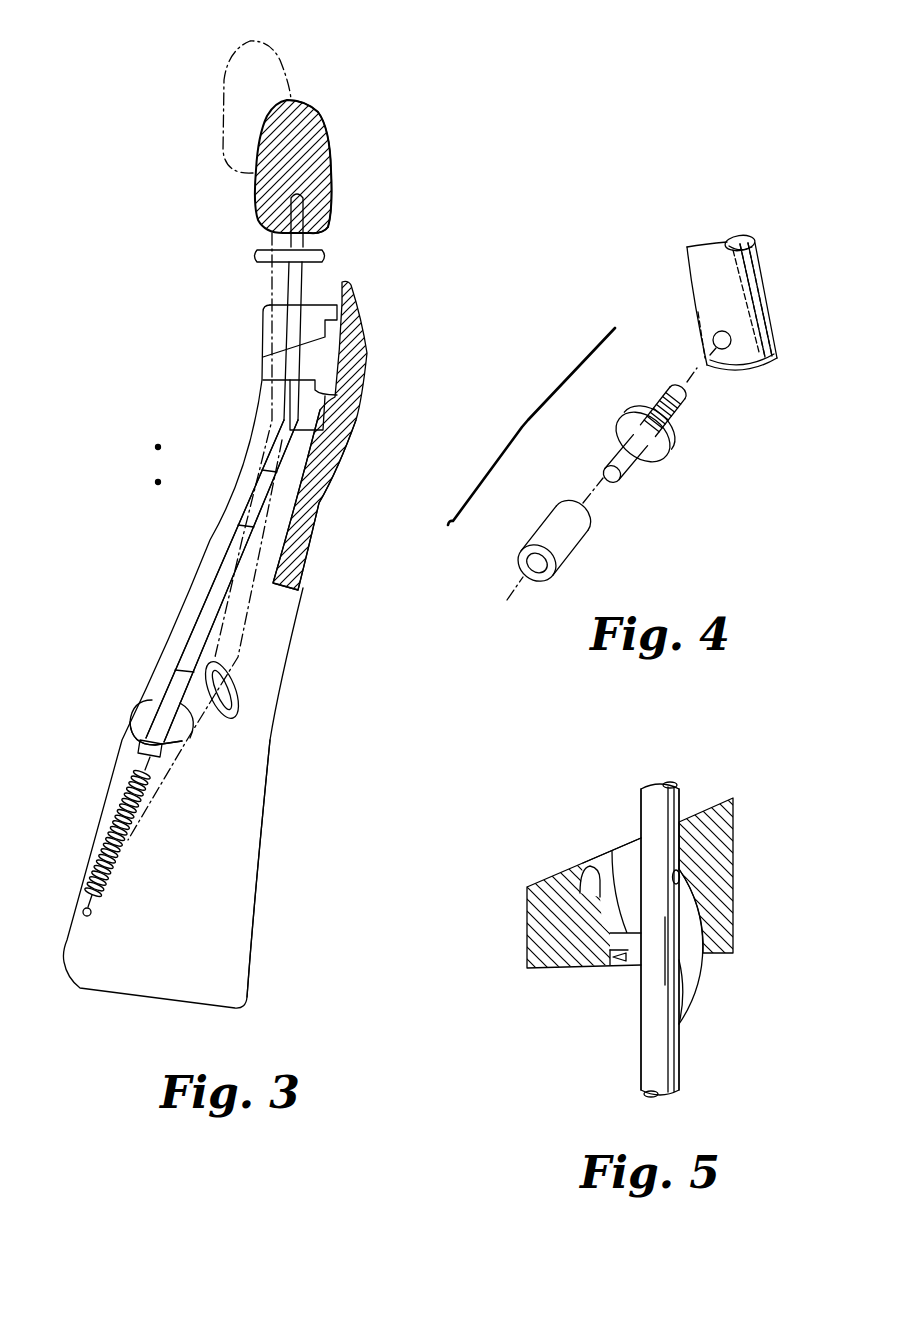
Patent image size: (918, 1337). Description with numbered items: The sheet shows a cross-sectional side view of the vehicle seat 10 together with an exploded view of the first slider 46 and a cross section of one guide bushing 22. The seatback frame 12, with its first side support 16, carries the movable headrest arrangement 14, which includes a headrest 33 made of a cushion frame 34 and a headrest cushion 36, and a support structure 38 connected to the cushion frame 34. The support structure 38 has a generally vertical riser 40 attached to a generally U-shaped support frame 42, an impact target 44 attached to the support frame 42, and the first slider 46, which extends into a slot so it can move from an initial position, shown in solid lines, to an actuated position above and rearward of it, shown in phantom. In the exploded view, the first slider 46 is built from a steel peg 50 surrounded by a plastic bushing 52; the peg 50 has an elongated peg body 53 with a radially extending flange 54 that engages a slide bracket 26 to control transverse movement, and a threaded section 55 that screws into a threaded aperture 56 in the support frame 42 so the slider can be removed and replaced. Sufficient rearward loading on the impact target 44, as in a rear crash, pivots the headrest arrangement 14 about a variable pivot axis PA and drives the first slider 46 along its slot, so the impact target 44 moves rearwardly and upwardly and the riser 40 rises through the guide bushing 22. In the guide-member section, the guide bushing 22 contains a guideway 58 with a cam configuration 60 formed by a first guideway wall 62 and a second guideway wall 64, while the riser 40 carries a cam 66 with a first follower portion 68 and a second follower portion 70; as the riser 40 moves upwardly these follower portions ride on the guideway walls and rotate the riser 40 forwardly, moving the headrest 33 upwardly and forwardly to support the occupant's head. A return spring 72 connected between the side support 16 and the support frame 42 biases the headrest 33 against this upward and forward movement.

In FIG. 3, the vehicle seat 10 is at (170, 228).
In FIG. 3, the seatback frame 12 is at (367, 350).
In FIG. 3, the headrest arrangement 14 is at (292, 55).
In FIG. 5, the headrest arrangement 14 is at (697, 1095).
In FIG. 3, the first side support 16 is at (262, 866).
In FIG. 3, the guide bushing 22 is at (200, 656).
In FIG. 5, the guide bushing 22 is at (616, 897).
In FIG. 3, the slide bracket 26 is at (202, 723).
In FIG. 3, the headrest 33 is at (325, 120).
In FIG. 3, the cushion frame 34 is at (335, 200).
In FIG. 3, the headrest cushion 36 is at (329, 155).
In FIG. 3, the support structure 38 is at (356, 412).
In FIG. 3, the riser 40 is at (307, 287).
In FIG. 5, the riser 40 is at (642, 1040).
In FIG. 4, the support frame 42 is at (758, 301).
In FIG. 3, the impact target 44 is at (203, 612).
In FIG. 3, the first slider 46 is at (152, 728).
In FIG. 4, the first slider 46 is at (531, 426).
In FIG. 3, the peg 50 is at (155, 712).
In FIG. 4, the peg 50 is at (656, 427).
In FIG. 4, the bushing 52 is at (583, 550).
In FIG. 4, the peg body 53 is at (607, 468).
In FIG. 3, the flange 54 is at (156, 733).
In FIG. 4, the flange 54 is at (672, 447).
In FIG. 4, the threaded section 55 is at (690, 410).
In FIG. 4, the threaded aperture 56 is at (732, 340).
In FIG. 5, the guideway 58 is at (623, 858).
In FIG. 5, the cam configuration 60 is at (640, 980).
In FIG. 5, the first guideway wall 62 is at (627, 930).
In FIG. 5, the second guideway wall 64 is at (681, 876).
In FIG. 5, the cam 66 is at (696, 1030).
In FIG. 5, the first follower portion 68 is at (590, 866).
In FIG. 5, the second follower portion 70 is at (697, 990).
In FIG. 3, the return spring 72 is at (126, 842).
In FIG. 3, the pivot axis PA is at (158, 447).